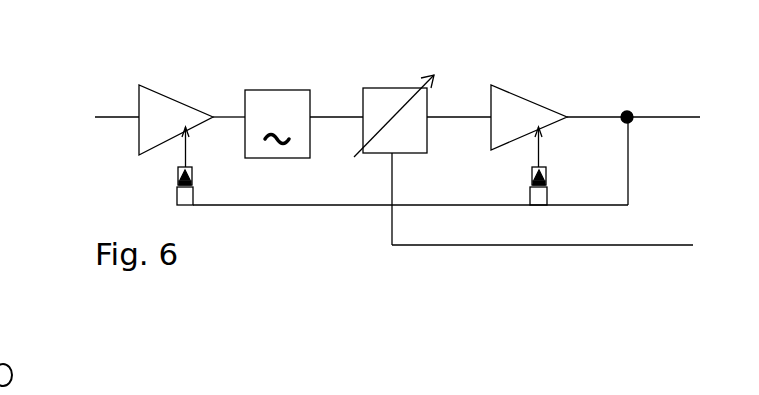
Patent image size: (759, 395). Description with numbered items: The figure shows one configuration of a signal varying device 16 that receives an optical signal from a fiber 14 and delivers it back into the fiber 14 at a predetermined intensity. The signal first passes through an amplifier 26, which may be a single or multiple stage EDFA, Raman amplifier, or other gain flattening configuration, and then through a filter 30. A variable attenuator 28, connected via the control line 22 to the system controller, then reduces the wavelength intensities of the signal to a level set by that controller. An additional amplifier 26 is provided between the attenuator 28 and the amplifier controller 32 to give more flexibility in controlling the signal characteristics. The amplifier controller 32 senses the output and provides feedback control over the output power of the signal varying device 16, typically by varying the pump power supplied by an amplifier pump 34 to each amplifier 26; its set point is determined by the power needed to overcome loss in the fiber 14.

The fiber 14 is at (105, 116).
The signal varying device 16 is at (582, 55).
The control line 22 is at (392, 220).
The amplifier 26 is at (178, 101).
The variable attenuator 28 is at (382, 88).
The filter 30 is at (283, 88).
The amplifier controller 32 is at (633, 122).
The amplifier pump 34 is at (175, 192).